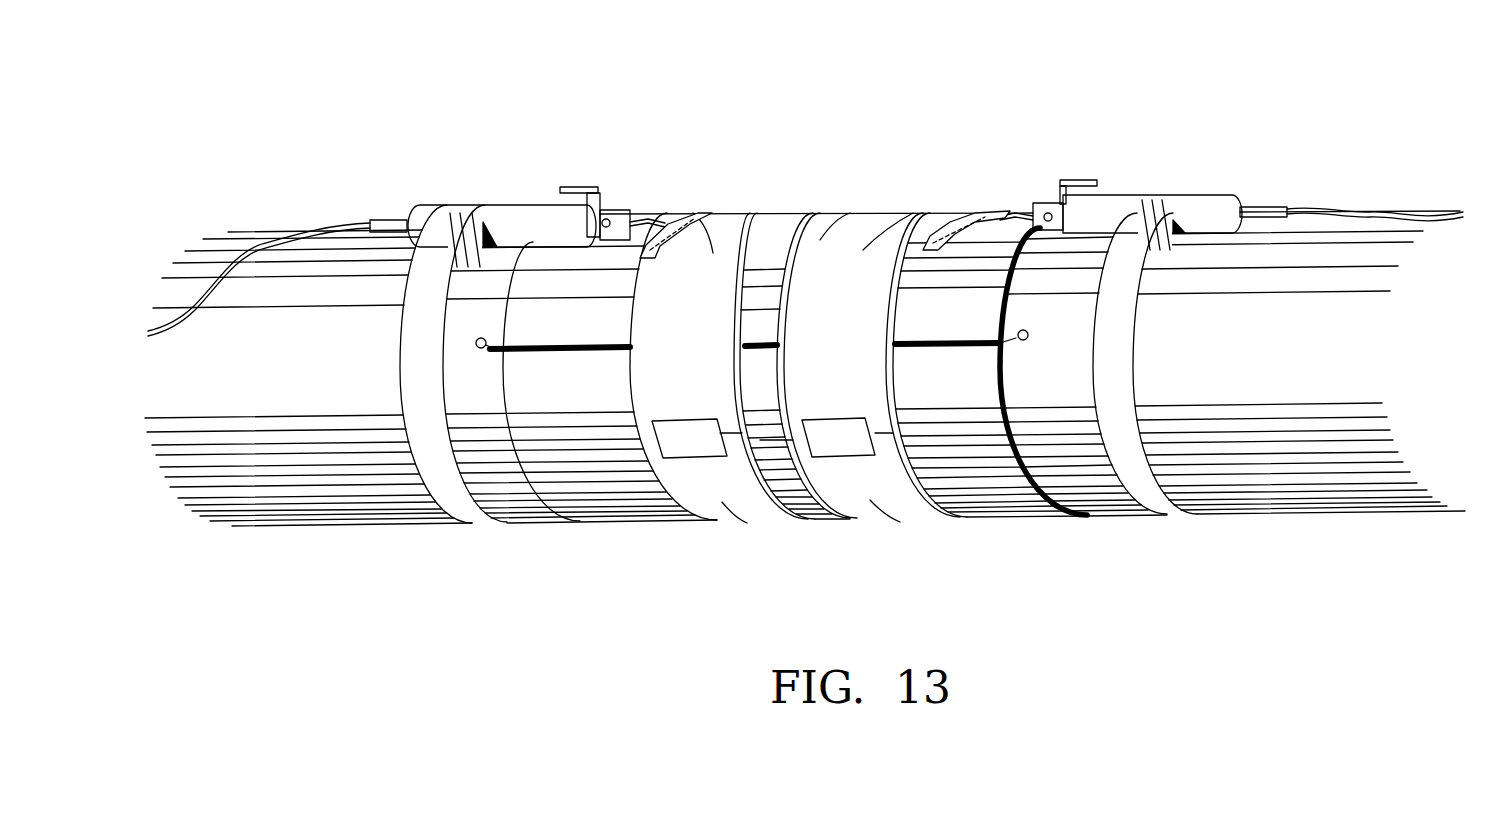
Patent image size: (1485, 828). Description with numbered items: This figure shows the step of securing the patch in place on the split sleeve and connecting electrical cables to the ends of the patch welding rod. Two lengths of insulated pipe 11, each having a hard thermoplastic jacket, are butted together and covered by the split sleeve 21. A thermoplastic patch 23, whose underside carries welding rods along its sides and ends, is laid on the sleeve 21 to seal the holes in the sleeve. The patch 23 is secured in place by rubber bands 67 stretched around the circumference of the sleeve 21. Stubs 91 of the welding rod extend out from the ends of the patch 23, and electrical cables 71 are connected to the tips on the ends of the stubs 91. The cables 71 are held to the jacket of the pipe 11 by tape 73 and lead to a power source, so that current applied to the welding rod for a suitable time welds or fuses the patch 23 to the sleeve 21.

The pipe 11 is at (313, 277).
The split sleeve 21 is at (997, 497).
The patch 23 is at (814, 214).
The rubber bands 67 is at (717, 225).
The electrical cables 71 is at (427, 215).
The tape 73 is at (470, 505).
The stubs 91 is at (648, 215).